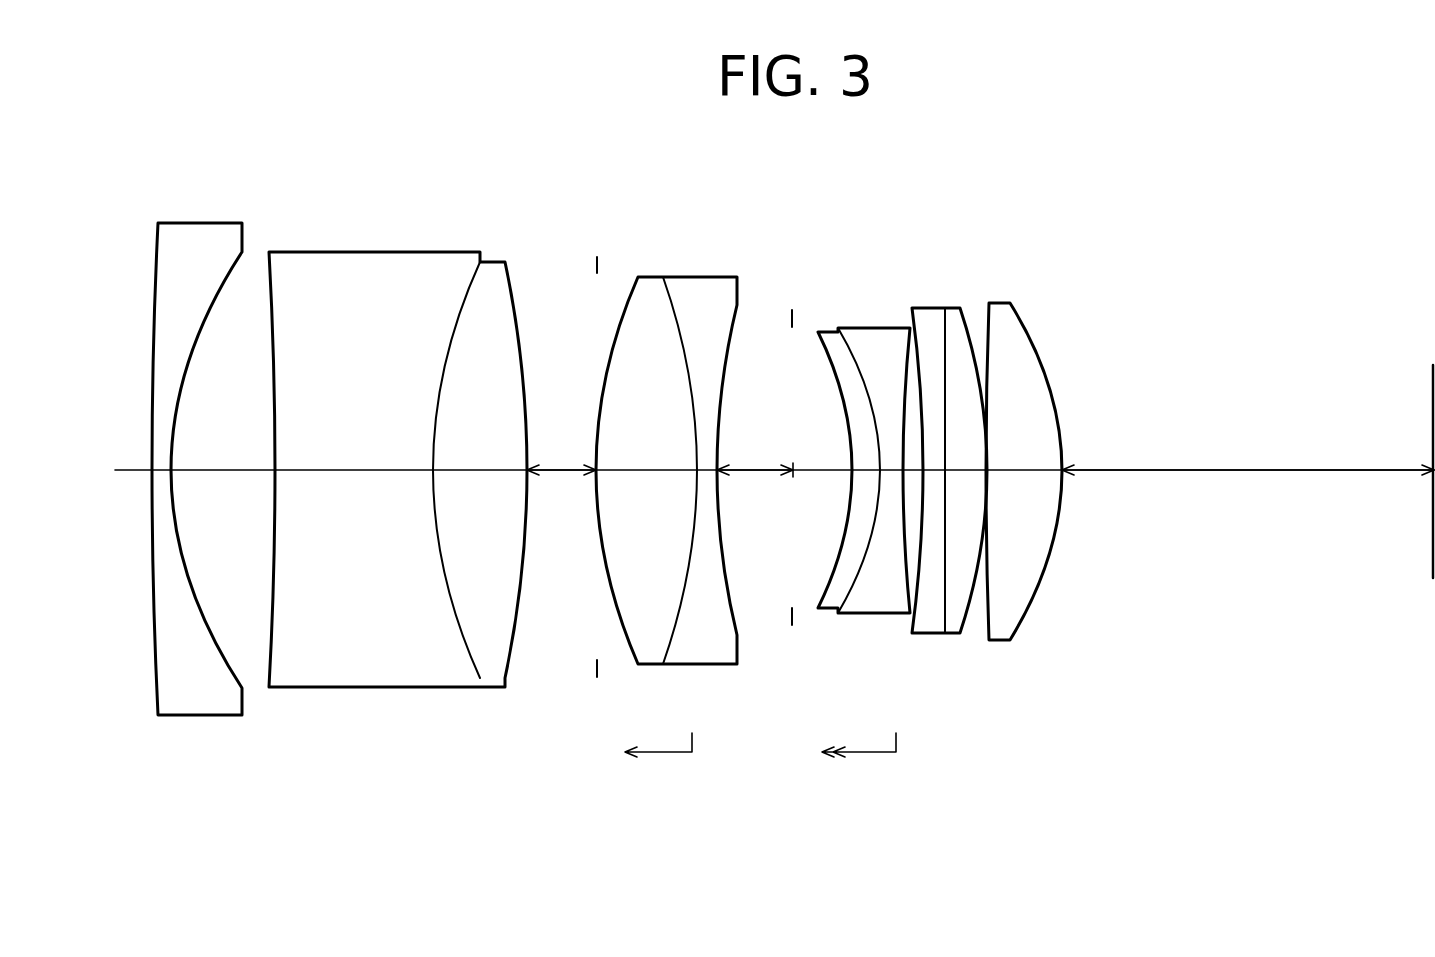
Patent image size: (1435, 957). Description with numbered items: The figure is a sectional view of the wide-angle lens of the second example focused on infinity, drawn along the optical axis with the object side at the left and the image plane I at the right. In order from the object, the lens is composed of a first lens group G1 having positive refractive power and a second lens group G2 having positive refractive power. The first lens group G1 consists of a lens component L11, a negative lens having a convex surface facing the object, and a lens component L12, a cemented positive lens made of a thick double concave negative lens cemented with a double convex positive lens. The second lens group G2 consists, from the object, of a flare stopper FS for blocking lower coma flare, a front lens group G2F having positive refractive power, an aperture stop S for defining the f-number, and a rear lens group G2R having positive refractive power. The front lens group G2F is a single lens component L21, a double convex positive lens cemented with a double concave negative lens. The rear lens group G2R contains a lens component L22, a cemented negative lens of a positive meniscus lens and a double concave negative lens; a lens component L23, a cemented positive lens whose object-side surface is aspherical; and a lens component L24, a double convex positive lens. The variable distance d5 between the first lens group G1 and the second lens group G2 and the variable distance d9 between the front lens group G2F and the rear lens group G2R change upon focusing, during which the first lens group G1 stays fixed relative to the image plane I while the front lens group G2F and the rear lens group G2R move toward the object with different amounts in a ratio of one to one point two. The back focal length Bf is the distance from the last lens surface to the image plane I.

The first lens group G1 is at (520, 805).
The 11 lens component L11 is at (213, 223).
The 12 lens component L12 is at (510, 247).
The variable distance at surface number five d5 is at (561, 457).
The second lens group G2 is at (1038, 805).
The flare stopper FS is at (597, 257).
The front lens group G2F is at (673, 475).
The 21 lens component L21 is at (738, 255).
The variable distance at surface number nine d9 is at (755, 458).
The aperture stop S is at (792, 310).
The rear lens group G2R is at (932, 483).
The 22 lens component L22 is at (902, 314).
The 23 lens component L23 is at (970, 295).
The 24 lens component L24 is at (1003, 303).
The back focal length Bf is at (1248, 456).
The image plane I is at (1433, 383).